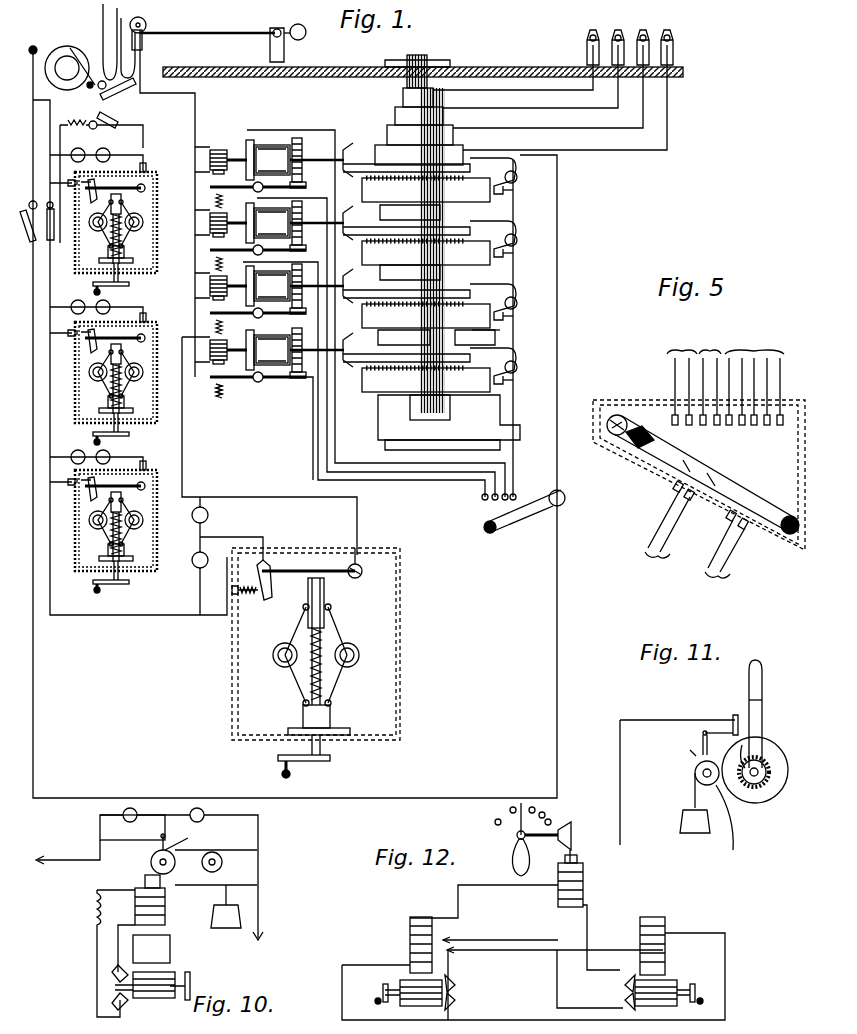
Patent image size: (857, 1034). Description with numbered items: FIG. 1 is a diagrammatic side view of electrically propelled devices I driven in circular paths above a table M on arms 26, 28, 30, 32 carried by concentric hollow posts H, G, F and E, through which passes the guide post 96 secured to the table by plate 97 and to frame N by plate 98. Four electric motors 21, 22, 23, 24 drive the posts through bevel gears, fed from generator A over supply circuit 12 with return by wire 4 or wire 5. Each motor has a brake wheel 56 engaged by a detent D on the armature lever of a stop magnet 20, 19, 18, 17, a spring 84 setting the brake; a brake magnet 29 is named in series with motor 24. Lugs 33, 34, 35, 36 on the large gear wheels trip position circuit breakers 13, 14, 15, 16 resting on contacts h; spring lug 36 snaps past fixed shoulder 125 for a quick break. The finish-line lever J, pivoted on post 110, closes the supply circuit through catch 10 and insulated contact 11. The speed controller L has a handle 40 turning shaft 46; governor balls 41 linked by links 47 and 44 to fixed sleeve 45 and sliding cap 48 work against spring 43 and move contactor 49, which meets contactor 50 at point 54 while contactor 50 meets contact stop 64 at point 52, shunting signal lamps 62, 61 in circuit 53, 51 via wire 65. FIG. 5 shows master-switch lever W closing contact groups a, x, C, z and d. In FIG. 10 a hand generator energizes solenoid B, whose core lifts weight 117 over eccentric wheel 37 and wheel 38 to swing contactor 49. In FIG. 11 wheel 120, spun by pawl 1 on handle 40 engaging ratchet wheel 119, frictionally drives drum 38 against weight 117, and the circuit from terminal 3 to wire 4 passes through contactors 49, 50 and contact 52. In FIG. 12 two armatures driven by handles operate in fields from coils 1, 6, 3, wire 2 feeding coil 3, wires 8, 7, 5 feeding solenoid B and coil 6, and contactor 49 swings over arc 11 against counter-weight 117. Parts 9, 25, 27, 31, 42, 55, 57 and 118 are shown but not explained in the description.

In FIG. 11, the pawl 1 is at (716, 744).
In FIG. 10, the pawl 1 is at (116, 980).
In FIG. 12, the pawl 1 is at (410, 953).
In FIG. 12, the wire 2 is at (516, 950).
In FIG. 10, the field coil 3 is at (258, 925).
In FIG. 12, the field coil 3 is at (665, 945).
In FIG. 1, the return wire 4 is at (33, 697).
In FIG. 11, the return wire 4 is at (674, 786).
In FIG. 12, the return wire 4 is at (533, 983).
In FIG. 11, the wire 5 is at (728, 821).
In FIG. 12, the wire 5 is at (516, 931).
In FIG. 1, the field coil 6 is at (277, 131).
In FIG. 12, the field coil 6 is at (410, 935).
In FIG. 1, the wire 7 is at (316, 198).
In FIG. 12, the wire 7 is at (516, 882).
In FIG. 1, the wire 8 is at (318, 262).
In FIG. 1, the conductor 9 is at (313, 400).
In FIG. 1, the catch 10 is at (147, 20).
In FIG. 1, the insulated contact 11 is at (147, 36).
In FIG. 5, the insulated contact 11 is at (770, 506).
In FIG. 12, the insulated contact 11 is at (503, 813).
In FIG. 1, the supply circuit 12 is at (195, 112).
In FIG. 1, the position circuit breaker 13 is at (520, 181).
In FIG. 1, the position circuit breaker 14 is at (522, 243).
In FIG. 1, the position circuit breaker 15 is at (522, 306).
In FIG. 1, the position circuit breaker 16 is at (522, 367).
In FIG. 1, the stop-controlling magnet 17 is at (217, 152).
In FIG. 10, the stop-controlling magnet 17 is at (235, 906).
In FIG. 1, the stop-controlling magnet 18 is at (222, 215).
In FIG. 1, the stop-controlling magnet 19 is at (225, 280).
In FIG. 1, the electromagnet 20 is at (225, 345).
In FIG. 1, the electric motor 21 is at (272, 160).
In FIG. 1, the electric motor 22 is at (272, 223).
In FIG. 1, the electric motor 23 is at (272, 286).
In FIG. 1, the electric motor 24 is at (272, 350).
In FIG. 1, the contact arm 25 is at (350, 147).
In FIG. 1, the arm 26 is at (664, 152).
In FIG. 1, the contact arm 27 is at (368, 221).
In FIG. 1, the arm 28 is at (640, 135).
In FIG. 1, the brake magnet 29 is at (367, 284).
In FIG. 1, the arm 30 is at (616, 113).
In FIG. 1, the contact arm 31 is at (365, 360).
In FIG. 1, the arm 32 is at (590, 96).
In FIG. 1, the lug 33 is at (408, 166).
In FIG. 1, the lug 34 is at (410, 228).
In FIG. 1, the lug 35 is at (408, 292).
In FIG. 1, the spring lug 36 is at (410, 356).
In FIG. 10, the eccentric wheel 37 is at (227, 860).
In FIG. 11, the wheel 38 is at (695, 773).
In FIG. 10, the wheel 38 is at (204, 867).
In FIG. 1, the handle 40 is at (154, 533).
In FIG. 11, the handle 40 is at (770, 714).
In FIG. 10, the handle 40 is at (211, 978).
In FIG. 12, the handle 40 is at (373, 991).
In FIG. 1, the governor ball 41 is at (360, 658).
In FIG. 1, the governor ball 42 is at (273, 660).
In FIG. 1, the spring 43 is at (303, 705).
In FIG. 1, the link 44 is at (294, 686).
In FIG. 1, the fixed sleeve 45 is at (332, 713).
In FIG. 1, the shaft 46 is at (332, 751).
In FIG. 1, the link 47 is at (294, 626).
In FIG. 1, the movable cap 48 is at (326, 593).
In FIG. 1, the motor-circuit contactor 49 is at (352, 566).
In FIG. 11, the motor-circuit contactor 49 is at (692, 757).
In FIG. 10, the motor-circuit contactor 49 is at (186, 841).
In FIG. 12, the motor-circuit contactor 49 is at (516, 828).
In FIG. 1, the motor-circuit contactor 50 is at (306, 585).
In FIG. 11, the motor-circuit contactor 50 is at (730, 733).
In FIG. 10, the motor-circuit contactor 50 is at (154, 834).
In FIG. 1, the circuit conductor 51 is at (145, 616).
In FIG. 10, the circuit conductor 51 is at (68, 851).
In FIG. 1, the contact point 52 is at (265, 606).
In FIG. 11, the contact point 52 is at (734, 714).
In FIG. 1, the circuit conductor 53 is at (183, 482).
In FIG. 11, the contact point 54 is at (702, 748).
In FIG. 1, the conductor 55 is at (207, 498).
In FIG. 1, the brake wheel 56 is at (288, 380).
In FIG. 1, the lever 57 is at (284, 570).
In FIG. 1, the signal lamp 61 is at (196, 568).
In FIG. 10, the signal lamp 61 is at (122, 812).
In FIG. 1, the signal lamp 62 is at (192, 518).
In FIG. 10, the signal lamp 62 is at (192, 810).
In FIG. 1, the contact stop 64 is at (250, 598).
In FIG. 10, the contact stop 64 is at (132, 827).
In FIG. 1, the conductor 65 is at (358, 548).
In FIG. 10, the conductor 65 is at (269, 944).
In FIG. 1, the spring 84 is at (226, 398).
In FIG. 1, the guide post 96 is at (422, 57).
In FIG. 1, the plate 97 is at (455, 63).
In FIG. 1, the plate 98 is at (452, 443).
In FIG. 1, the post 110 is at (296, 46).
In FIG. 11, the weight 117 is at (705, 835).
In FIG. 12, the weight 117 is at (516, 866).
In FIG. 11, the pawl 118 is at (748, 756).
In FIG. 11, the ratchet wheel 119 is at (770, 778).
In FIG. 11, the fly wheel 120 is at (788, 762).
In FIG. 1, the fixed shoulder 125 is at (503, 333).